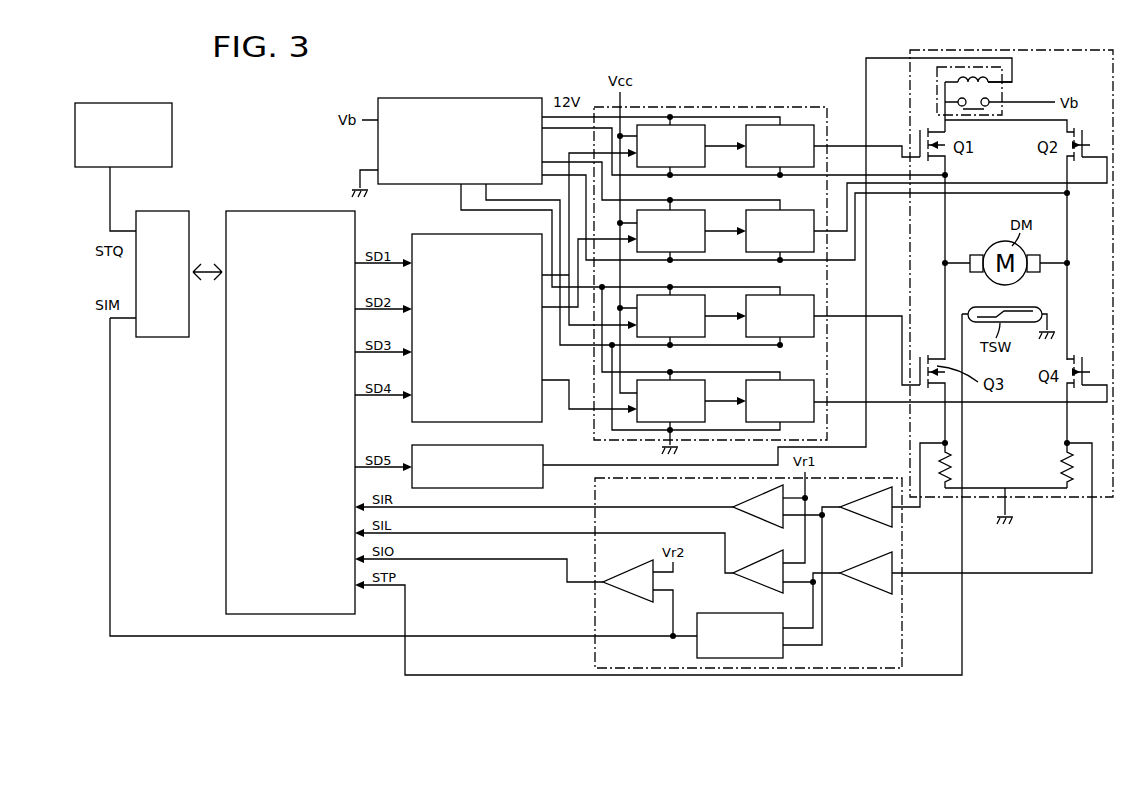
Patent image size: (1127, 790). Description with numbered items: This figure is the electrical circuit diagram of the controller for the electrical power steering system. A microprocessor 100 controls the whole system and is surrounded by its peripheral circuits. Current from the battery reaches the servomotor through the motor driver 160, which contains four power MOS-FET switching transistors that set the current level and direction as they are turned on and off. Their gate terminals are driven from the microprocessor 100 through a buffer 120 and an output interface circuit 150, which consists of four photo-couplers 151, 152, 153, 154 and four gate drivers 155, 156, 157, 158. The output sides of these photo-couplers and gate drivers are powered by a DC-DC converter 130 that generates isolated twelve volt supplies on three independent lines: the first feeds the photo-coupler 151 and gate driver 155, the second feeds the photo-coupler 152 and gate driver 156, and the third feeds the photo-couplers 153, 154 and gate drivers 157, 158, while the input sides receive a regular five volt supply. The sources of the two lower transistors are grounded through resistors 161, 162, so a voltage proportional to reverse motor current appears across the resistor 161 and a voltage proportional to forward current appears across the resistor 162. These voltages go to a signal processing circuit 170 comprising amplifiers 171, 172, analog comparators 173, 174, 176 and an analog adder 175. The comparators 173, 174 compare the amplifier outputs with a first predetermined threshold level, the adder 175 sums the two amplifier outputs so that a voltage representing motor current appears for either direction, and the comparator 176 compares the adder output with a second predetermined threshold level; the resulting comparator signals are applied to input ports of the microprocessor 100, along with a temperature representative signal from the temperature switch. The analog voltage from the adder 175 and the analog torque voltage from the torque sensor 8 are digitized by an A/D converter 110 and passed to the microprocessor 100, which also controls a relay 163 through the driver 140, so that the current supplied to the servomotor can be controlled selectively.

The torque sensor 8 is at (172, 127).
The microprocessor 100 is at (267, 211).
The A/D converter 110 is at (161, 211).
The buffer 120 is at (436, 234).
The DC-DC converter 130 is at (490, 98).
The driver 140 is at (545, 482).
The output interface circuit 150 is at (792, 105).
The photo-coupler 151 is at (660, 167).
The photo-coupler 152 is at (660, 253).
The photo-coupler 153 is at (659, 338).
The photo-coupler 154 is at (684, 380).
The gate driver 155 is at (790, 168).
The gate driver 156 is at (790, 253).
The gate driver 157 is at (792, 338).
The gate driver 158 is at (757, 380).
The motor driver 160 is at (906, 72).
The resistor 161 is at (952, 461).
The resistor 162 is at (1049, 465).
The relay 163 is at (1008, 95).
The signal processing circuit 170 is at (905, 612).
The amplifier 171 is at (866, 512).
The amplifier 172 is at (866, 585).
The analog comparator 173 is at (755, 512).
The analog comparator 174 is at (730, 578).
The analog adder 175 is at (697, 643).
The analog comparator 176 is at (625, 577).